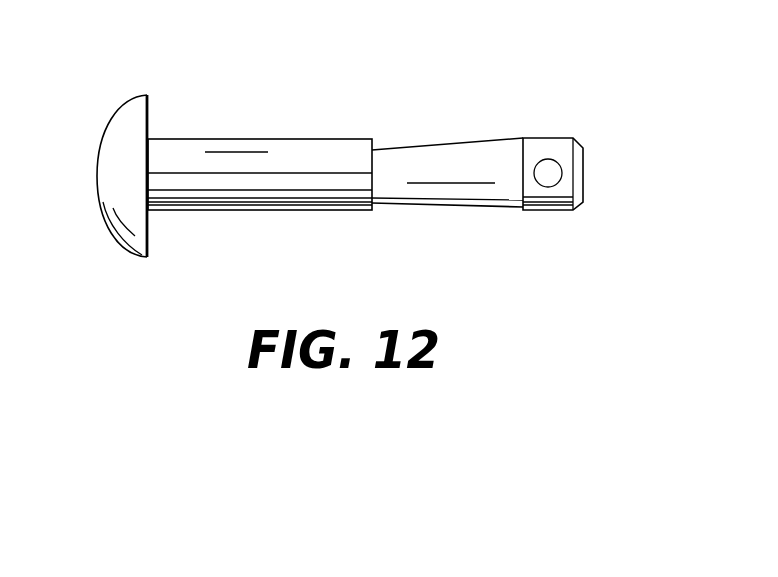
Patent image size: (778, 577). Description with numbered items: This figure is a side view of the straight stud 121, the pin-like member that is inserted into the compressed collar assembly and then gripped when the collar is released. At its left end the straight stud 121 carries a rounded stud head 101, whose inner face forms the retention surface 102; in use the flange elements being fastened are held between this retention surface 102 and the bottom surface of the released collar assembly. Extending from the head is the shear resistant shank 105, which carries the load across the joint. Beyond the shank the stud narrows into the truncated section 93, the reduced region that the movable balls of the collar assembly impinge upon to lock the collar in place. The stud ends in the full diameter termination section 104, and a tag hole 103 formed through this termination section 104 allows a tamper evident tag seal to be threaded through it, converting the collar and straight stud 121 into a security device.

The rounded stud head 101 is at (98, 160).
The retention surface 102 is at (148, 112).
The shear resistant shank 105 is at (293, 137).
The truncated section 93 is at (456, 142).
The tag hole 103 is at (546, 158).
The full diameter termination section 104 is at (552, 210).
The straight stud 121 is at (237, 230).